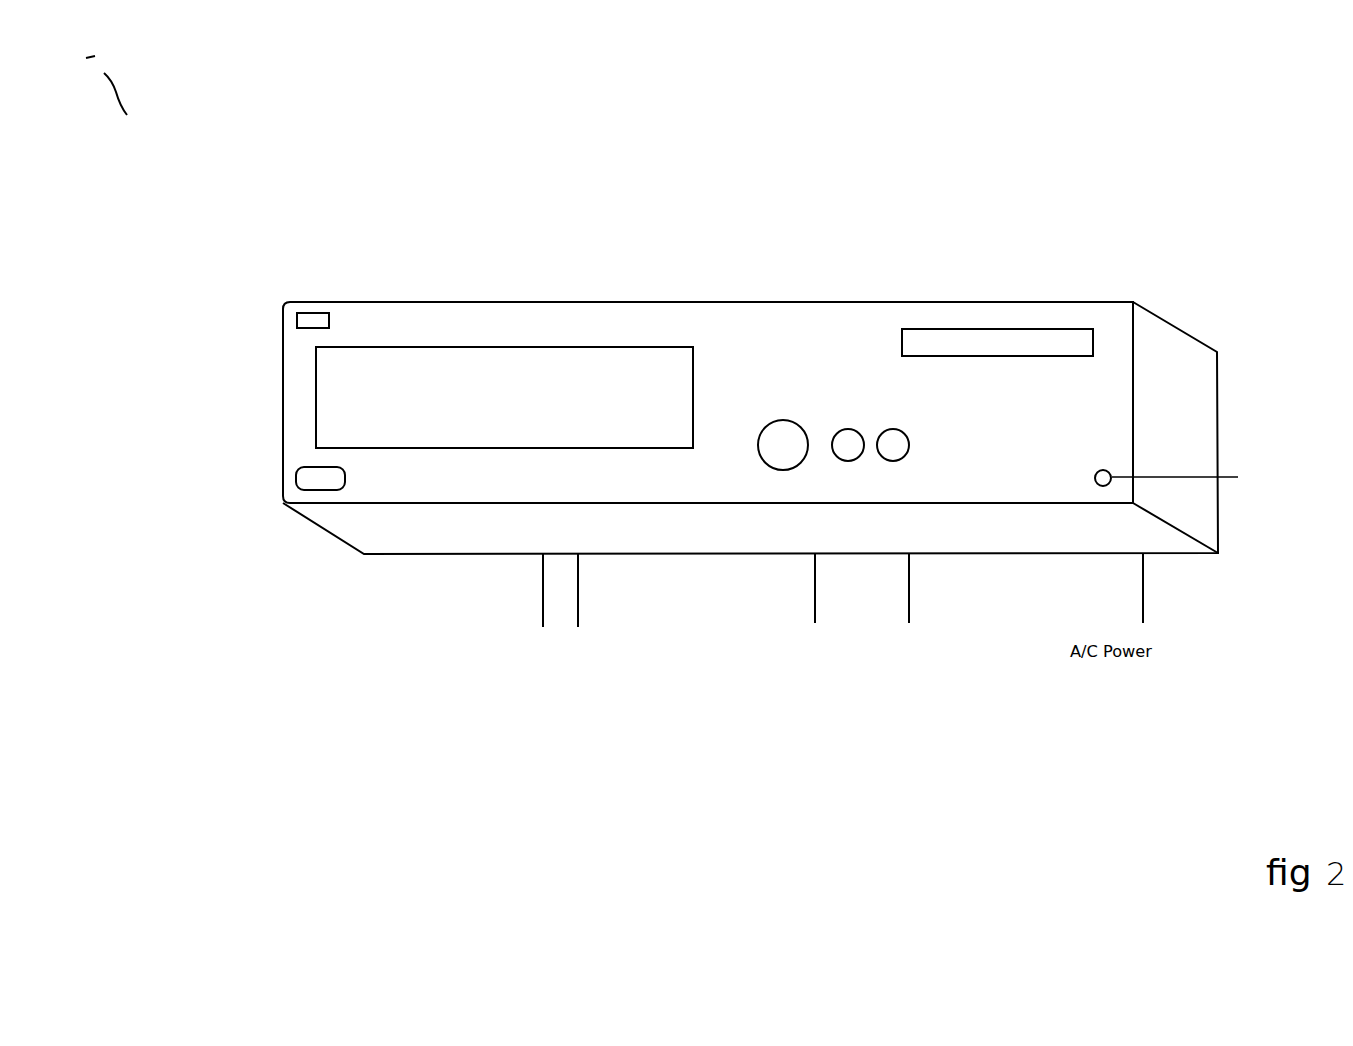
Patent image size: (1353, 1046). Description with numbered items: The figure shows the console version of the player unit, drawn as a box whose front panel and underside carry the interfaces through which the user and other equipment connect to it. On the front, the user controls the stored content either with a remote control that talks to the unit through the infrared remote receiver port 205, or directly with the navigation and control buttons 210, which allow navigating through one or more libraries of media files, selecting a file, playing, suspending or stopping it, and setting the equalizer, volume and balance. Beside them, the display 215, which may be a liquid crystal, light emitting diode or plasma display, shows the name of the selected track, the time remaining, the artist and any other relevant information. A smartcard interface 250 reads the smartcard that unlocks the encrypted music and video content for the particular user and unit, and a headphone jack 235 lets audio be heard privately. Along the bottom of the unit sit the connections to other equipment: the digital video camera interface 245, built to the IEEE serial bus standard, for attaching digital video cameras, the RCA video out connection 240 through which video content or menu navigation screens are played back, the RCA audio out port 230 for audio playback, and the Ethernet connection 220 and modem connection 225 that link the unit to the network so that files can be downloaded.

The infrared remote receiver port 205 is at (315, 248).
The display 215 is at (470, 347).
The navigation and control buttons 210 is at (783, 420).
The smartcard interface 250 is at (980, 329).
The headphone jack 235 is at (1235, 487).
The IEEE-1394 interface 245 is at (319, 490).
The RCA video out connection 240 is at (533, 598).
The RCA audio out port 230 is at (586, 603).
The Ethernet connection 220 is at (813, 588).
The modem connection 225 is at (916, 592).